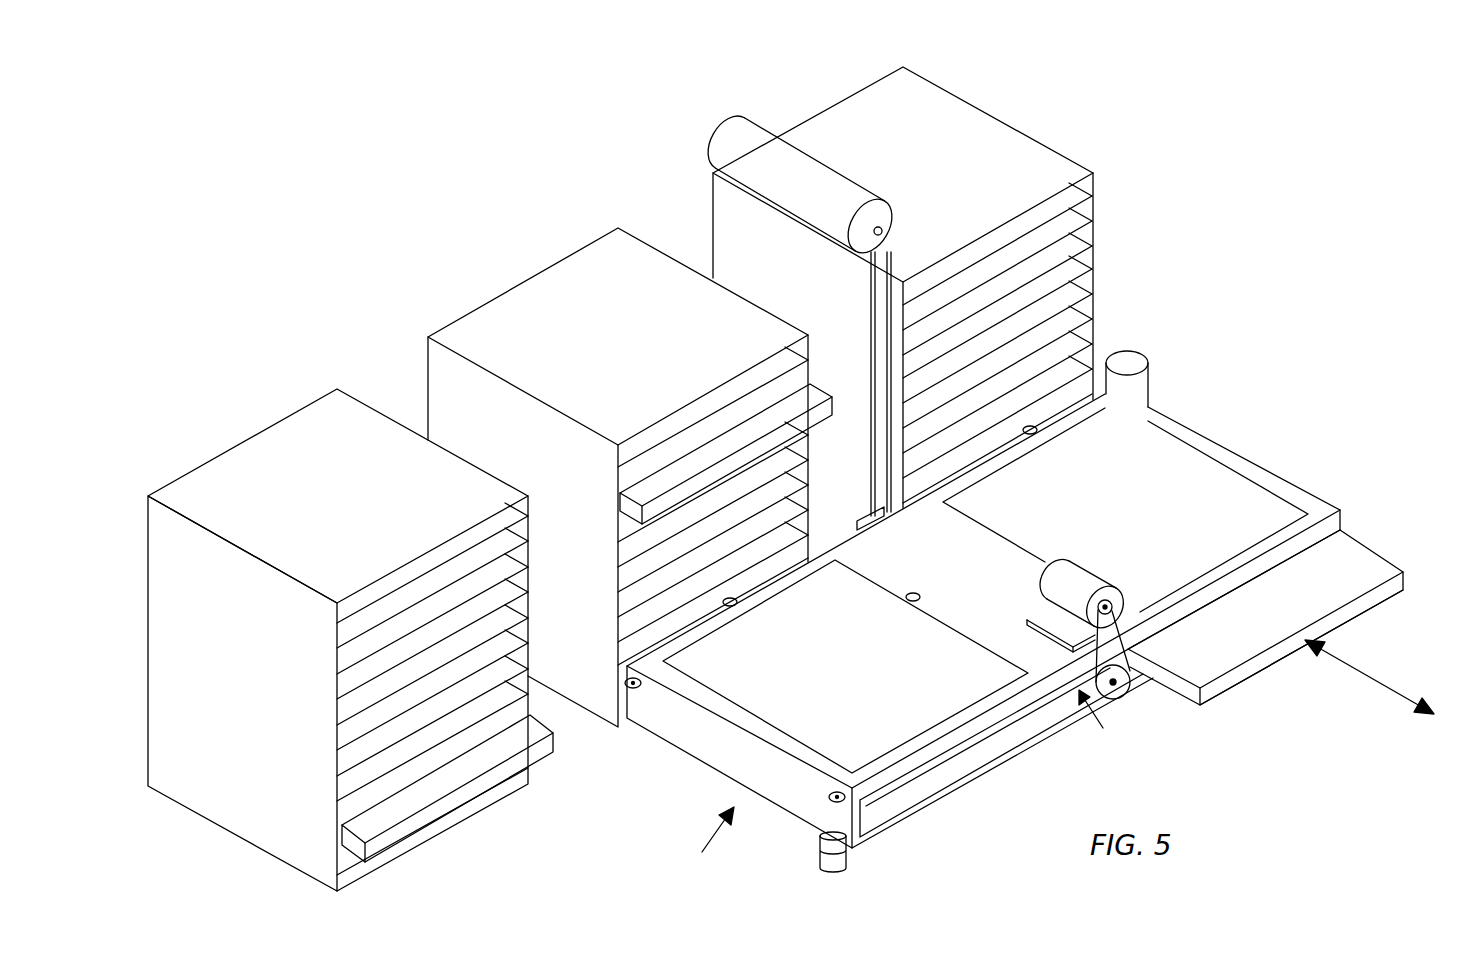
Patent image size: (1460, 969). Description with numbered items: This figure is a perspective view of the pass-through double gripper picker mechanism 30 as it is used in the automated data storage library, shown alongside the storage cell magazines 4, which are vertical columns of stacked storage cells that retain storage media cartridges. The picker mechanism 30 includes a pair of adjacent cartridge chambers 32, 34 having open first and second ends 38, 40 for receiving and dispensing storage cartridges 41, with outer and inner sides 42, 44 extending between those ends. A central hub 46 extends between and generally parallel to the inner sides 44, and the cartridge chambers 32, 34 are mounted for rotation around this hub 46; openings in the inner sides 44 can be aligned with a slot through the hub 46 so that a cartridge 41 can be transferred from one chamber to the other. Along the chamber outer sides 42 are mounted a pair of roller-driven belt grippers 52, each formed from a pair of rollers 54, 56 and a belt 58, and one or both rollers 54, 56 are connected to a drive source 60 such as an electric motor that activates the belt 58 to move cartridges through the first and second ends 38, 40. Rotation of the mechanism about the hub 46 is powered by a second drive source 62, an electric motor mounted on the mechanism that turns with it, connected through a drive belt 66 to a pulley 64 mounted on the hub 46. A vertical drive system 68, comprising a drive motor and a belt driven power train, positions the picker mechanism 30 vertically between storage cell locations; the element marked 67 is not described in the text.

The storage cell magazine 4 is at (928, 283).
The pass-through double gripper picker mechanism 30 is at (1030, 625).
The cartridge chamber 32 is at (960, 762).
The cartridge chamber 34 is at (1300, 553).
The first end 38 is at (735, 606).
The second end 40 is at (1247, 577).
The storage cartridge 41 is at (1388, 594).
The outer side 42 is at (1340, 530).
The inner side 44 is at (912, 603).
The central hub 46 is at (1109, 723).
The roller-driven belt gripper 52 is at (708, 849).
The roller 54 is at (632, 690).
The roller 56 is at (830, 799).
The belt 58 is at (712, 762).
The drive source 60 is at (840, 859).
The drive source 62 is at (1083, 577).
The pulley 64 is at (1115, 694).
The drive belt 66 is at (1137, 612).
The storage cabinet 67 is at (498, 262).
The vertical drive system 68 is at (792, 98).